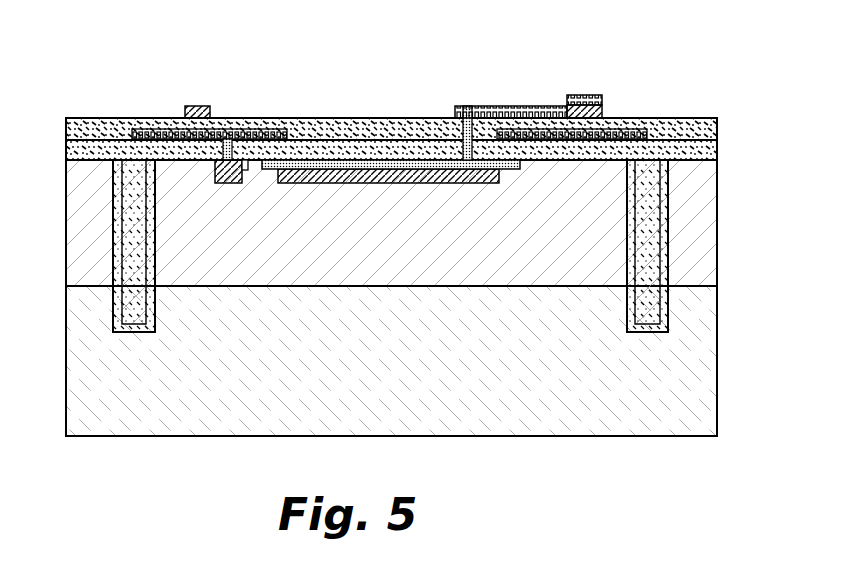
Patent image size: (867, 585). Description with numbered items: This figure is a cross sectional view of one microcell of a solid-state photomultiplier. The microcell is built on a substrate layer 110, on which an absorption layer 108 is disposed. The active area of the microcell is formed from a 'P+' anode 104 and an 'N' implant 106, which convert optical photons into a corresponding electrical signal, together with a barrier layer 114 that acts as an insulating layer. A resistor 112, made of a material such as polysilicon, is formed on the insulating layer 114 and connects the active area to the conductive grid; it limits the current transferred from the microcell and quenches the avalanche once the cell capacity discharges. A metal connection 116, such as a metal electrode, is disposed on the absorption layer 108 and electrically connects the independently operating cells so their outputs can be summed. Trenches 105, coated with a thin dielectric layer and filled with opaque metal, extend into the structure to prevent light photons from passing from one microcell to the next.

The 'P+' anode 104 is at (407, 167).
The trench 105 is at (647, 192).
The 'N' implant 106 is at (330, 180).
The absorption layer 108 is at (610, 243).
The substrate layer 110 is at (705, 347).
The resistor 112 is at (185, 108).
The barrier layer 114 is at (378, 120).
The metal connection 116 is at (590, 95).